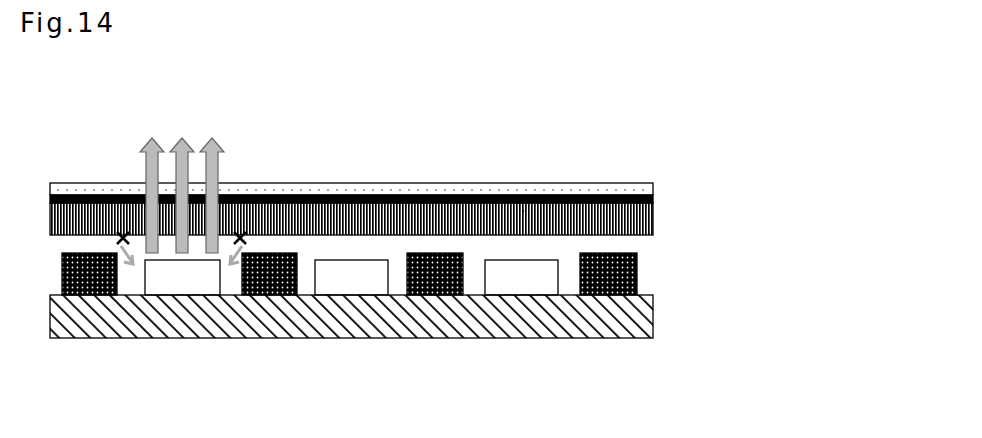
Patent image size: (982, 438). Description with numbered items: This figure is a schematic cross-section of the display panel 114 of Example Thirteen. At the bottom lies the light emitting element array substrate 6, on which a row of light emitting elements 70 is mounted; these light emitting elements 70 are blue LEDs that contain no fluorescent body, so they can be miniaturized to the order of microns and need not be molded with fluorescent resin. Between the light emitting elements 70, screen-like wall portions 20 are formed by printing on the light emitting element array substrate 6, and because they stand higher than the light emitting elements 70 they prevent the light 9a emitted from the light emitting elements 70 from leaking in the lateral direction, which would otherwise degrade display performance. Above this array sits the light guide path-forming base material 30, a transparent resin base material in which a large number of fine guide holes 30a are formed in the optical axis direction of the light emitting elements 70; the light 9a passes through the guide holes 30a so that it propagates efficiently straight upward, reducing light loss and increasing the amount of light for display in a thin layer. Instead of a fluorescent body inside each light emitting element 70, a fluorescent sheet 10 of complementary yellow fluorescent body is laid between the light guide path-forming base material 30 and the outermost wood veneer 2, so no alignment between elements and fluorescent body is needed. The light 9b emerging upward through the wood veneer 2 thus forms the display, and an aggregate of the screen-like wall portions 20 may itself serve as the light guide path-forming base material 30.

The wood veneer 2 is at (653, 186).
The fluorescent sheet 10 is at (653, 197).
The light guide path-forming base material 30 is at (653, 218).
The guide hole 30a is at (523, 208).
The screen-like wall portion 20 is at (637, 268).
The light emitting element 70 is at (527, 280).
The light emitting element array substrate 6 is at (653, 318).
The light emitted from the light emitting element 9a is at (182, 200).
The emitted light 9b is at (182, 140).
The display panel 114 is at (848, 91).